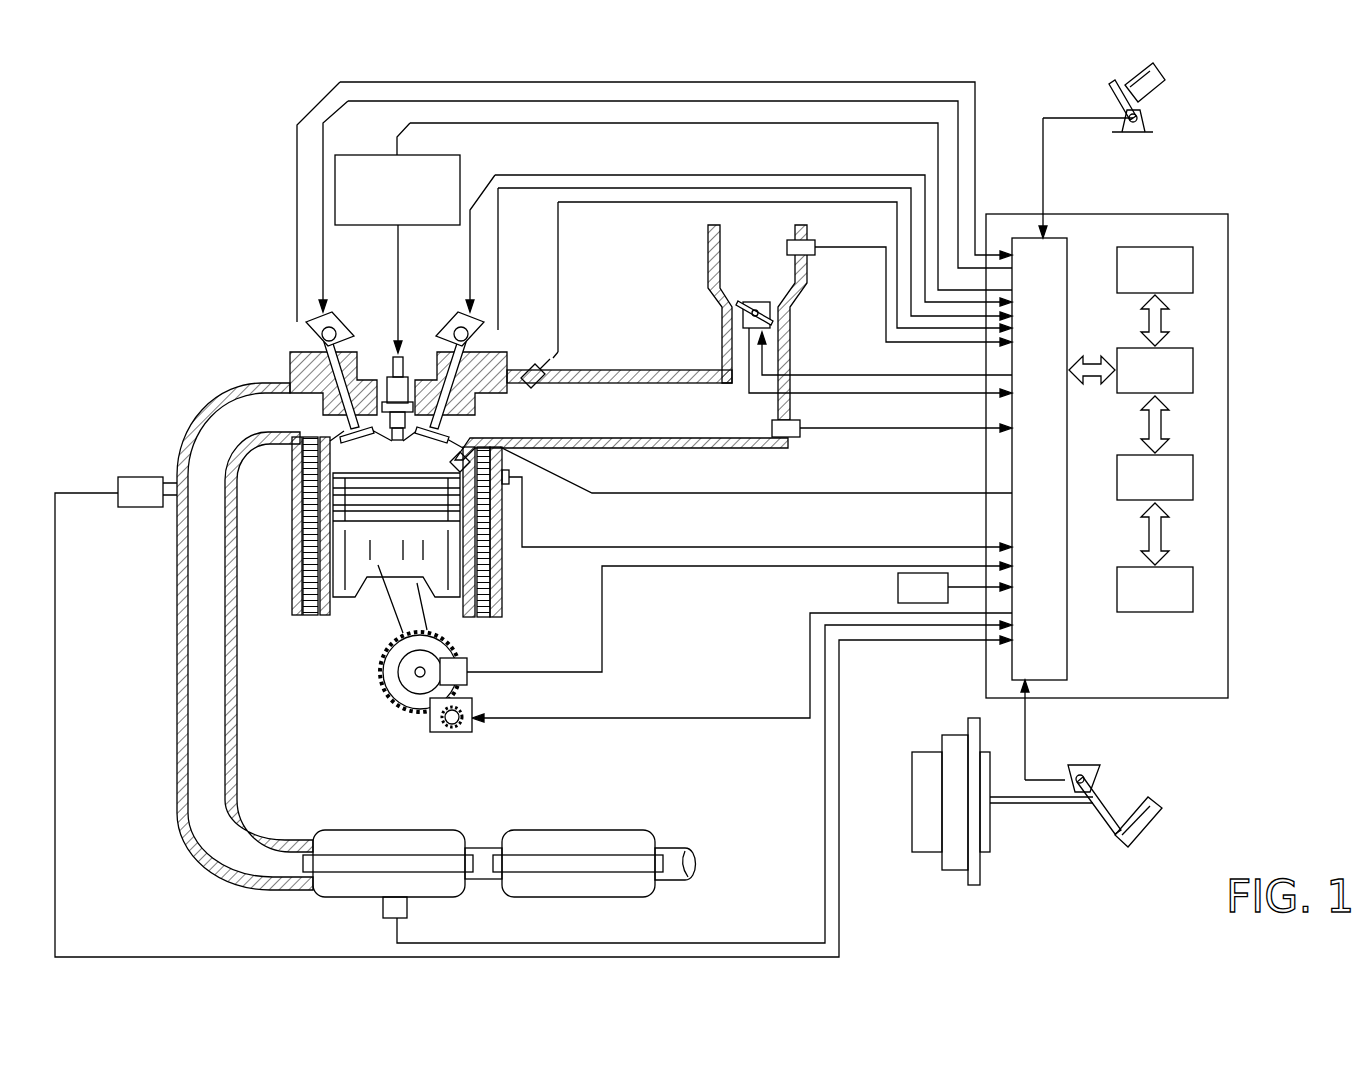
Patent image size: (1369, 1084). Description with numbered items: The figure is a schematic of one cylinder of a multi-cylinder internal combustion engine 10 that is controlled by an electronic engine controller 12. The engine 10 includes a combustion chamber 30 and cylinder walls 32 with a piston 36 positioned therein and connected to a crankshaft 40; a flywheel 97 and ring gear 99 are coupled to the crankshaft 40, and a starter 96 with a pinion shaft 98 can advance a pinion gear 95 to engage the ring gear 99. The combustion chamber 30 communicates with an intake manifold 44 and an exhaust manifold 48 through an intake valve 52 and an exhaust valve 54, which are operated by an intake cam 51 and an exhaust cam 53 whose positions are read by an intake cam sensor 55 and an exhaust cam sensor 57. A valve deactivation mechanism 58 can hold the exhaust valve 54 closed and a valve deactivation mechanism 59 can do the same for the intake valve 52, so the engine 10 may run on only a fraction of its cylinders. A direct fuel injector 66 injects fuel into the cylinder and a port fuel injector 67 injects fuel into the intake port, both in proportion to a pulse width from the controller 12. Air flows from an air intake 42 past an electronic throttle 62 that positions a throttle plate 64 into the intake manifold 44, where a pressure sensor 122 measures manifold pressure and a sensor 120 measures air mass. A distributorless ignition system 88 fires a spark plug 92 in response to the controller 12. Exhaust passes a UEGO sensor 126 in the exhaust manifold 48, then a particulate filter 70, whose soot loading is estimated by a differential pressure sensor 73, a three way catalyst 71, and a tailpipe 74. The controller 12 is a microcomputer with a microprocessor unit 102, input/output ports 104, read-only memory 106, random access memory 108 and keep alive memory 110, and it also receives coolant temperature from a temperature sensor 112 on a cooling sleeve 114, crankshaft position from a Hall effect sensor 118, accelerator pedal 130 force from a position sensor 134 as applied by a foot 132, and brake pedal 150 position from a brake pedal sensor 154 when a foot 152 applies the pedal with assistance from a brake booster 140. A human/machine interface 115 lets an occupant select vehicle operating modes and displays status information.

The internal combustion engine 10 is at (222, 300).
The electronic engine controller 12 is at (1218, 214).
The combustion chamber 30 is at (305, 563).
The cylinder walls 32 is at (340, 602).
The piston 36 is at (378, 563).
The crankshaft 40 is at (403, 700).
The air intake 42 is at (768, 276).
The intake manifold 44 is at (700, 424).
The exhaust manifold 48 is at (275, 429).
The intake cam 51 is at (450, 330).
The intake valve 52 is at (437, 420).
The exhaust cam 53 is at (320, 336).
The exhaust valve 54 is at (297, 392).
The intake cam sensor 55 is at (483, 342).
The exhaust cam sensor 57 is at (306, 338).
The valve deactivation mechanism 58 is at (733, 332).
The valve deactivation mechanism 59 is at (442, 362).
The electronic throttle 62 is at (770, 307).
The throttle plate 64 is at (723, 310).
The direct fuel injector 66 is at (518, 457).
The port fuel injector 67 is at (556, 372).
The particulate filter 70 is at (332, 830).
The three way catalyst 71 is at (540, 830).
The differential pressure sensor 73 is at (407, 907).
The tailpipe 74 is at (668, 880).
The distributorless ignition system 88 is at (350, 155).
The spark plug 92 is at (400, 366).
The pinion gear 95 is at (457, 733).
The starter 96 is at (468, 732).
The flywheel 97 is at (393, 670).
The pinion shaft 98 is at (443, 727).
The ring gear 99 is at (413, 713).
The microprocessor unit 102 is at (1197, 375).
The input/output ports 104 is at (1072, 247).
The read-only memory 106 is at (1195, 266).
The random access memory 108 is at (1197, 482).
The keep alive memory 110 is at (1197, 590).
The temperature sensor 112 is at (518, 483).
The cooling sleeve 114 is at (493, 568).
The human/machine interface 115 is at (955, 588).
The Hall effect sensor 118 is at (467, 660).
The air mass sensor 120 is at (807, 238).
The pressure sensor 122 is at (792, 437).
The Universal Exhaust Gas Oxygen sensor 126 is at (118, 480).
The accelerator pedal 130 is at (1113, 93).
The foot 132 is at (1165, 80).
The position sensor 134 is at (1147, 118).
The brake booster 140 is at (912, 852).
The brake pedal 150 is at (1110, 827).
The foot 152 is at (1148, 800).
The brake pedal sensor 154 is at (1067, 778).